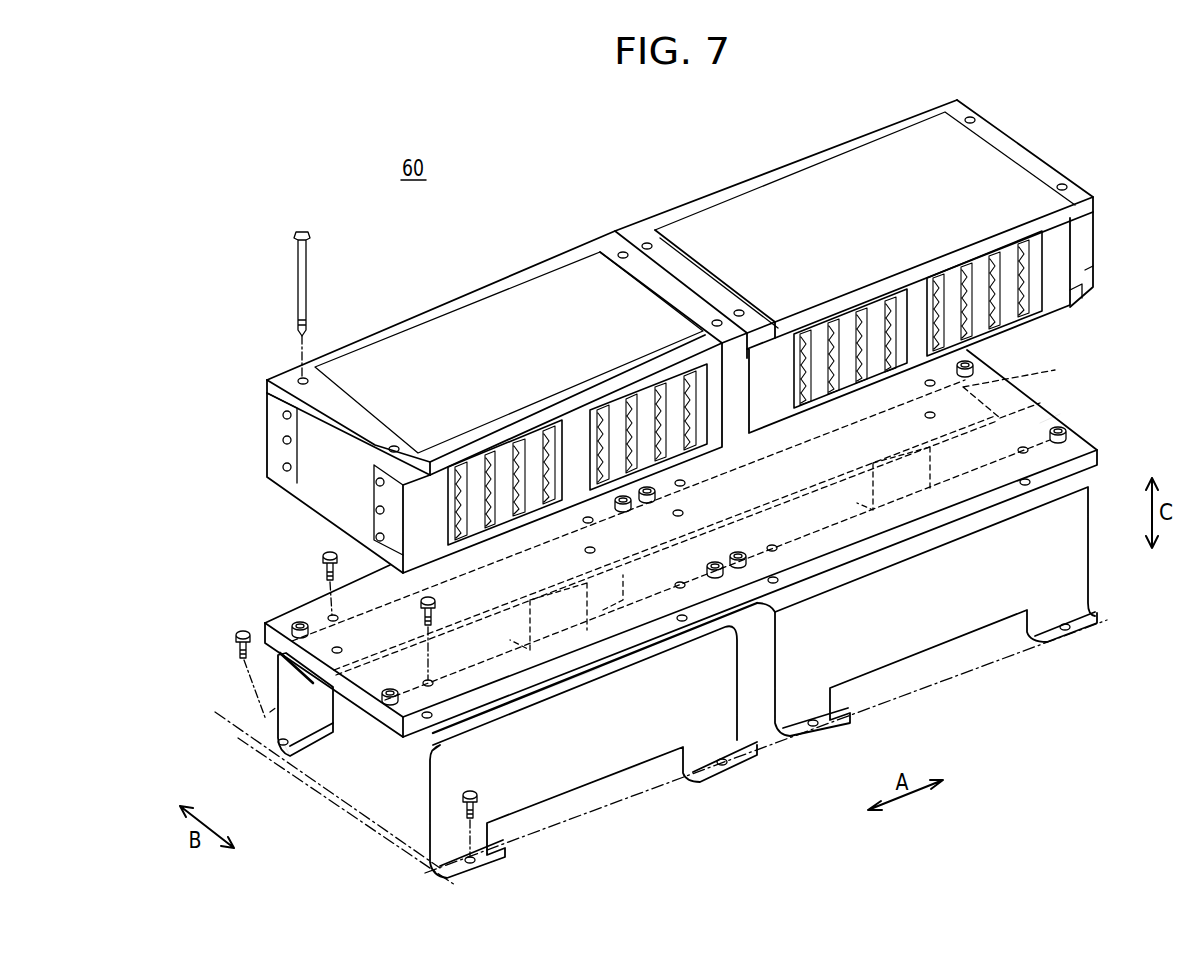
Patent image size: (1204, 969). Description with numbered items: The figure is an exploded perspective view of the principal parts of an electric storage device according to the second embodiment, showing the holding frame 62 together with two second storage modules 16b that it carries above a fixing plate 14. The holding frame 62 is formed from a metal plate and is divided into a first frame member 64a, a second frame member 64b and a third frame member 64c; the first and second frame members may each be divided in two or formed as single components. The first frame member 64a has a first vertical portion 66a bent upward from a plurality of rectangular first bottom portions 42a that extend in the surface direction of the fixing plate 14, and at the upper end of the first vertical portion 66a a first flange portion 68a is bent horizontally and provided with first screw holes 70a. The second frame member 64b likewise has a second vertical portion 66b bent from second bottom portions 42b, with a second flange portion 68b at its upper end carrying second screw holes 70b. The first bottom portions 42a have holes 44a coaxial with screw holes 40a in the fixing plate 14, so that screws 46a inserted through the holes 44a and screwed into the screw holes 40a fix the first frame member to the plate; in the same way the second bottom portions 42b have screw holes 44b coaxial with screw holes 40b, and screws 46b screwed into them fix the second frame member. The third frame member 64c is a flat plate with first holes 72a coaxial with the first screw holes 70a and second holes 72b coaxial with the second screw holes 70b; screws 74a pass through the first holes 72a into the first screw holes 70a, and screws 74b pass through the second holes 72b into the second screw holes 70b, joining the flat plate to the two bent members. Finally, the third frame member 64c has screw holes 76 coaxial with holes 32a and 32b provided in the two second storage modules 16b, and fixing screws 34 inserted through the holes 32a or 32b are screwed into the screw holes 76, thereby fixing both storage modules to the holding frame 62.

The fixing plate 14 is at (238, 748).
The second storage module 16b is at (506, 262).
The hole 32a is at (298, 378).
The hole 32b is at (623, 251).
The fixing screw 34 is at (309, 262).
The screw hole 40a is at (310, 760).
The screw hole 40b is at (480, 867).
The first bottom portion 42a is at (280, 750).
The second bottom portion 42b is at (448, 862).
The hole 44a is at (300, 742).
The screw hole 44b is at (490, 848).
The screw 46a is at (240, 632).
The screw 46b is at (474, 793).
The holding frame 62 is at (1121, 360).
The first frame member 64a is at (1020, 404).
The second frame member 64b is at (663, 775).
The third frame member 64c is at (1071, 417).
The first vertical portion 66a is at (275, 708).
The second vertical portion 66b is at (635, 770).
The first flange portion 68a is at (305, 690).
The second flange portion 68b is at (375, 728).
The first screw hole 70a is at (343, 647).
The second screw hole 70b is at (433, 715).
The first hole 72a is at (332, 614).
The second hole 72b is at (432, 680).
The screw 74a is at (330, 552).
The screw 74b is at (438, 596).
The screw hole 76 is at (298, 624).